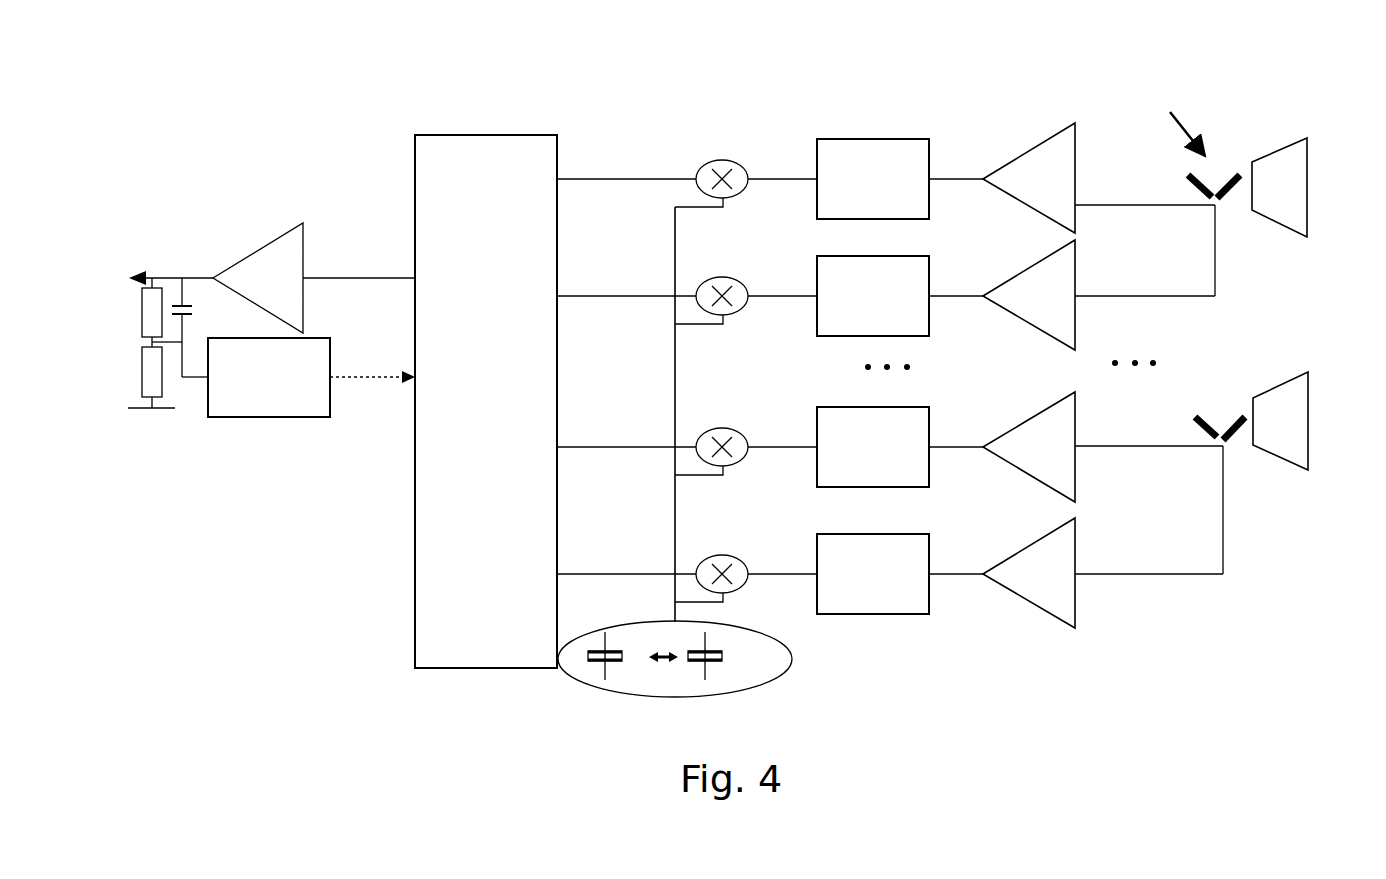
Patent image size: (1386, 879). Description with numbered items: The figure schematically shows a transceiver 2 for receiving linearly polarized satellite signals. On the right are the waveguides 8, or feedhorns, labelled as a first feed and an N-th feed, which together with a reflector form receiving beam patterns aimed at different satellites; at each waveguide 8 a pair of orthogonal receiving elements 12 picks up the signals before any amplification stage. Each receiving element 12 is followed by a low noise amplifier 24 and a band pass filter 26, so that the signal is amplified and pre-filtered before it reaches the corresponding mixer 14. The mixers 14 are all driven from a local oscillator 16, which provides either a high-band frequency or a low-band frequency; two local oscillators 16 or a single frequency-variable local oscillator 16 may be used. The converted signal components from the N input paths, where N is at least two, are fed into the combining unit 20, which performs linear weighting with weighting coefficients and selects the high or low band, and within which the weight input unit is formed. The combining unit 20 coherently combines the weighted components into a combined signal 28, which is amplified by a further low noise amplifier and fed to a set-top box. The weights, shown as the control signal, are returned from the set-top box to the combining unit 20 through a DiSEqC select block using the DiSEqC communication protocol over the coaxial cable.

The transceiver 2 is at (337, 70).
The waveguide 8 is at (1307, 165).
The receiving element 12 is at (1175, 155).
The mixer 14 is at (738, 125).
The local oscillator 16 is at (790, 670).
The combining unit 20 is at (487, 133).
The low noise amplifier 24 is at (1038, 130).
The band pass filter 26 is at (887, 122).
The combined signal 28 is at (378, 277).